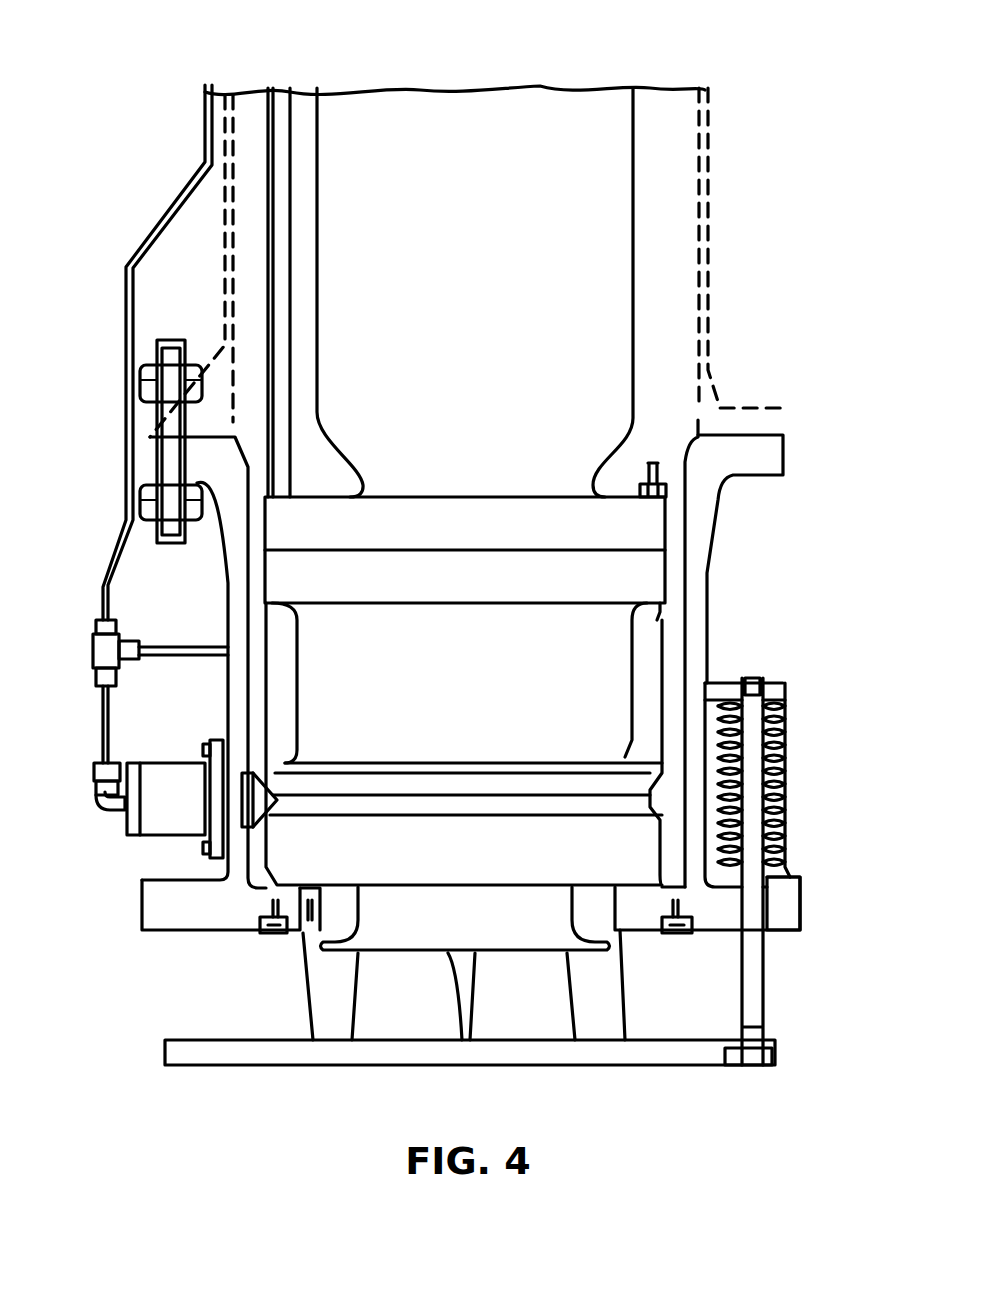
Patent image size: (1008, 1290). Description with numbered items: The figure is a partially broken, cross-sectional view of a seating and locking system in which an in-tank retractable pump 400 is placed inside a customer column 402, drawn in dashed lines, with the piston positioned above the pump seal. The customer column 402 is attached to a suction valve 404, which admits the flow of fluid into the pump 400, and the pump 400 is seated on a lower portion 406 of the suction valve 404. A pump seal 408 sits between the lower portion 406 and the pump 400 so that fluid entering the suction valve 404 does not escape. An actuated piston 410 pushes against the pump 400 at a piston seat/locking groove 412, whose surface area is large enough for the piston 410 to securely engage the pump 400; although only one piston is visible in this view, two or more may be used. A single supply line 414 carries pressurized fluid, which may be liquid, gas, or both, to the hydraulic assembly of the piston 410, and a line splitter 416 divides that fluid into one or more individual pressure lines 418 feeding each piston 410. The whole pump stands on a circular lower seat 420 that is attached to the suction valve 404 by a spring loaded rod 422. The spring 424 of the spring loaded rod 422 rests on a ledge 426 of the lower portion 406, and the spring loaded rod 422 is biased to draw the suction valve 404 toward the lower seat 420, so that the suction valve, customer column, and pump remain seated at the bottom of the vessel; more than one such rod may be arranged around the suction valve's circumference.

The in-tank retractable pump 400 is at (546, 105).
The customer column 402 is at (225, 205).
The suction valve 404 is at (235, 583).
The lower portion of the suction valve 406 is at (158, 918).
The pump seal 408 is at (640, 877).
The actuated piston 410 is at (158, 824).
The piston seat/locking groove 412 is at (612, 785).
The supply line 414 is at (125, 305).
The line splitter 416 is at (97, 648).
The individual pressure line 418 is at (105, 722).
The lower seat 420 is at (242, 1065).
The spring loaded rod 422 is at (748, 1012).
The spring 424 is at (777, 737).
The ledge 426 is at (785, 900).